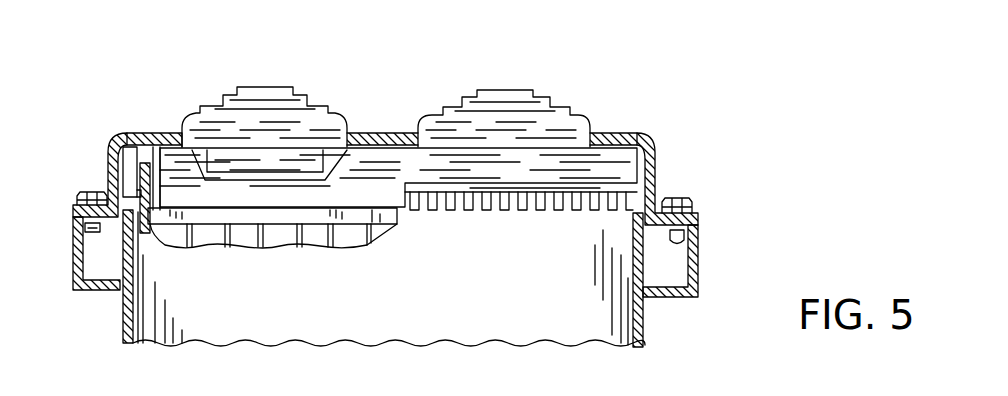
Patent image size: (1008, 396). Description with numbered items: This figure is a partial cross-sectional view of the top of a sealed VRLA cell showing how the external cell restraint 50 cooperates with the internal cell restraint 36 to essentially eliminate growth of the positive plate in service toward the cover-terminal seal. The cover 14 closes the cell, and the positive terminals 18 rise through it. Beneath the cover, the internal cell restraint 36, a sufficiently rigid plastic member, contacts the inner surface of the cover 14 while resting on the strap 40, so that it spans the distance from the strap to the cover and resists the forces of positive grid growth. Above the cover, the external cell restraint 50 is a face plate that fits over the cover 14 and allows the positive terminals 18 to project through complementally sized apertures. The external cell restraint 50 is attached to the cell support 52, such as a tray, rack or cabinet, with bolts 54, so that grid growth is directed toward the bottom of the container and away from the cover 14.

The cover 14 is at (132, 150).
The positive terminals 18 is at (260, 90).
The internal cell restraint 36 is at (372, 182).
The strap 40 is at (157, 213).
The external cell restraint 50 is at (145, 133).
The cell support 52 is at (128, 338).
The bolts 54 is at (85, 192).